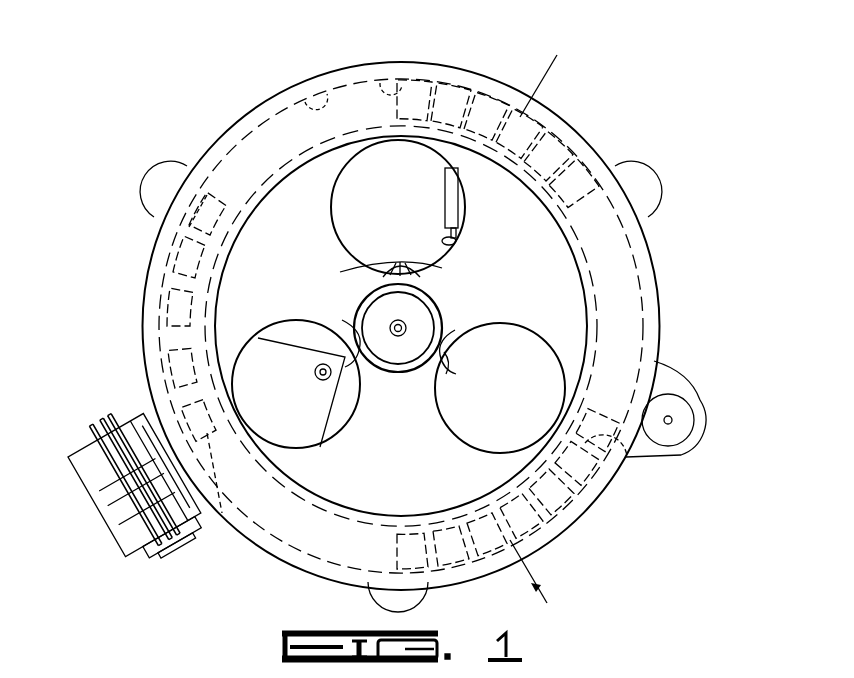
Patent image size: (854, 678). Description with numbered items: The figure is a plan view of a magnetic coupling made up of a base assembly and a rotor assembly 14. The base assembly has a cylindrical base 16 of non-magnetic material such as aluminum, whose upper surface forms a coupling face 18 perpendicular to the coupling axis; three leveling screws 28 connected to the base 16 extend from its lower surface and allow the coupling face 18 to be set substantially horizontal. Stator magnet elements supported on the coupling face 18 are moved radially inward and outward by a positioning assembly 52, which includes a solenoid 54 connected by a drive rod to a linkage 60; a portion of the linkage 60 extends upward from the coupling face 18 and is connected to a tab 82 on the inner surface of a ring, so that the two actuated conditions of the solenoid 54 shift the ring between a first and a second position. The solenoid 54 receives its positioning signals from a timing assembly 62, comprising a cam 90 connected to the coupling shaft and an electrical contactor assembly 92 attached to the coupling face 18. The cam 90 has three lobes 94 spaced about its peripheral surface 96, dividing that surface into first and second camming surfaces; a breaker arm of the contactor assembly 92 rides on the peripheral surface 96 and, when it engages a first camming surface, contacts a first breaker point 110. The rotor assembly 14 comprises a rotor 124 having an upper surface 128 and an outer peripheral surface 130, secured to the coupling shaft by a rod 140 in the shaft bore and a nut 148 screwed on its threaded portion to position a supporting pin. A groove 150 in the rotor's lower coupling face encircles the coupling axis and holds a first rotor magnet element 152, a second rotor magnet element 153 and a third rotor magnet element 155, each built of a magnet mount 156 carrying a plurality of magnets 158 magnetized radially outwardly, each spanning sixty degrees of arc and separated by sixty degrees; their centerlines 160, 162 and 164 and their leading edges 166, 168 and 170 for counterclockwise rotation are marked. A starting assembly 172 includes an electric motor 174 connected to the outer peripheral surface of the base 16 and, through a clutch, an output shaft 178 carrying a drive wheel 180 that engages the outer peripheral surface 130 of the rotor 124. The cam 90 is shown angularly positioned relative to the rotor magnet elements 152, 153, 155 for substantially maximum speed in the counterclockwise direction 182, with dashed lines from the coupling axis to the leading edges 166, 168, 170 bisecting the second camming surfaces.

The rotor assembly 14 is at (650, 270).
The cylindrical base 16 is at (472, 48).
The coupling face 18 is at (526, 414).
The leveling screws 28 is at (176, 168).
The positioning assembly 52 is at (103, 466).
The solenoid 54 is at (102, 490).
The linkage 60 is at (315, 373).
The timing assembly 62 is at (445, 210).
The tab 82 is at (300, 415).
The cam 90 is at (385, 268).
The electrical contactor assembly 92 is at (457, 185).
The lobes 94 is at (420, 270).
The peripheral surface 96 is at (450, 360).
The first breaker point 110 is at (456, 242).
The rotor 124 is at (652, 302).
The upper surface 128 is at (319, 542).
The outer peripheral surface 130 is at (598, 480).
The rod 140 is at (410, 322).
The nut 148 is at (392, 348).
The groove 150 is at (310, 82).
The first rotor magnet element 152 is at (190, 222).
The second rotor magnet element 153 is at (540, 558).
The third rotor magnet element 155 is at (417, 86).
The magnet mounts 156 is at (560, 120).
The magnets 158 is at (452, 88).
The centerline of first rotor magnet element 160 is at (190, 327).
The centerline of second rotor magnet element 162 is at (537, 586).
The centerline of third rotor magnet element 164 is at (543, 68).
The leading edge of first rotor magnet element 166 is at (222, 513).
The leading edge of second rotor magnet element 168 is at (637, 463).
The leading edge of third rotor magnet element 170 is at (391, 84).
The starting assembly 172 is at (702, 415).
The electric motor 174 is at (660, 373).
The output shaft 178 is at (670, 418).
The drive wheel 180 is at (680, 432).
The counterclockwise direction 182 is at (393, 18).